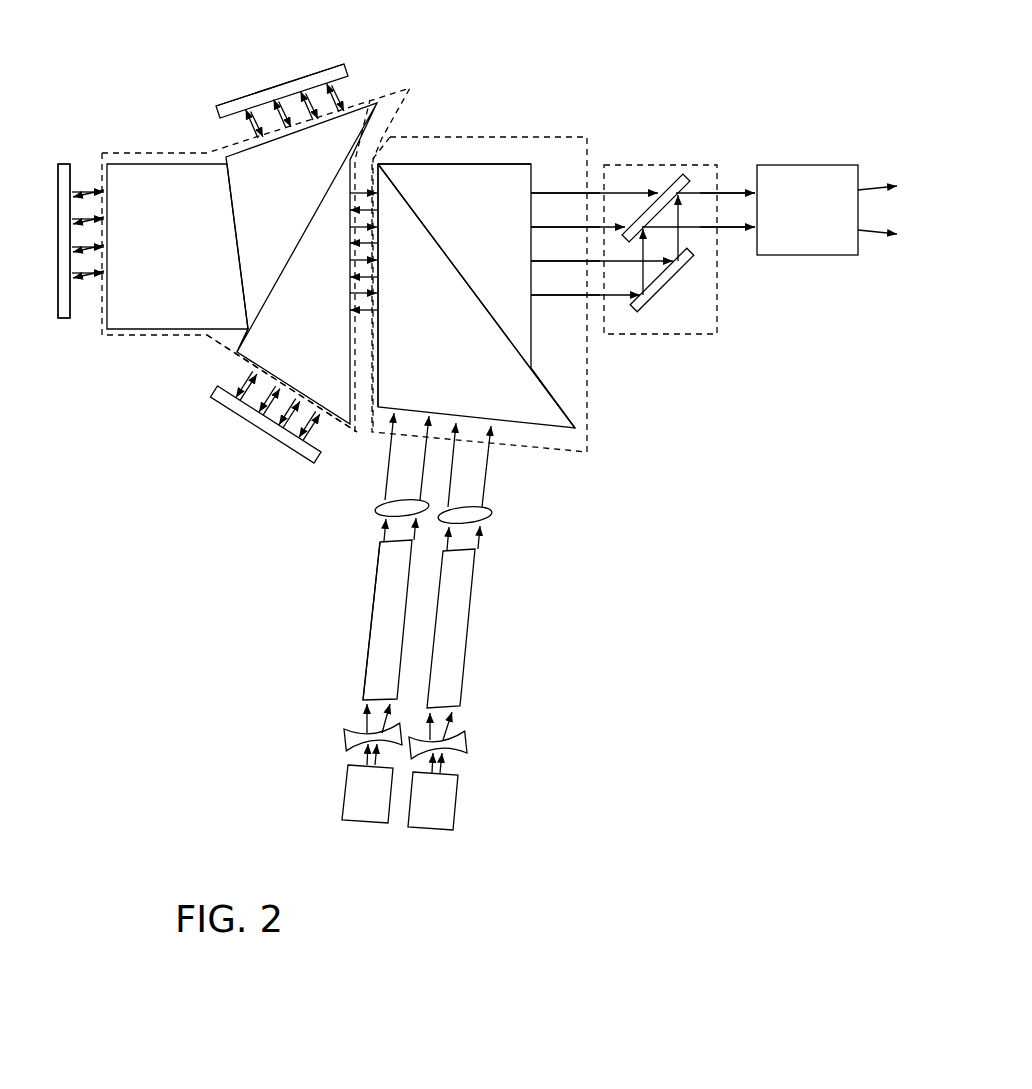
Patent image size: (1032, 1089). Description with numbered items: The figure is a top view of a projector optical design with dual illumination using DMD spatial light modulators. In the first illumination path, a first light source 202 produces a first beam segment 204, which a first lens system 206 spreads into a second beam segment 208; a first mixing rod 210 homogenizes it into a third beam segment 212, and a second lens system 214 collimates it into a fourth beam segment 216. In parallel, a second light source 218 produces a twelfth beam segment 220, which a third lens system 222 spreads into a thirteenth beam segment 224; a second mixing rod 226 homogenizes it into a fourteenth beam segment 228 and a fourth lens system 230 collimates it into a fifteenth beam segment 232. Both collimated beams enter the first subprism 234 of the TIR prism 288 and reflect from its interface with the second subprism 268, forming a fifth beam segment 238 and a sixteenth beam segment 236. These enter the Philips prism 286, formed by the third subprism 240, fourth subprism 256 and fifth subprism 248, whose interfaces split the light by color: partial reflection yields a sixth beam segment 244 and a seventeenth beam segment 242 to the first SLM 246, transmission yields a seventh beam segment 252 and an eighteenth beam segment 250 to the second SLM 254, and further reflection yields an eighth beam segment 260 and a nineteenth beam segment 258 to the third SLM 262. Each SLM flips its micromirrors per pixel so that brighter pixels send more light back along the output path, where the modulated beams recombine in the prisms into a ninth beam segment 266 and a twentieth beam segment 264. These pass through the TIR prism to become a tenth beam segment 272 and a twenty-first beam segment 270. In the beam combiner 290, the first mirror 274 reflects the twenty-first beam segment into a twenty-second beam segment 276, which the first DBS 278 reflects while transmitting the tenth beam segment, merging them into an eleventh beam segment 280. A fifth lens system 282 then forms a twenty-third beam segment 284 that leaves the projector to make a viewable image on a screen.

The first light source 202 is at (342, 800).
The first beam segment 204 is at (357, 758).
The first lens system 206 is at (345, 737).
The second beam segment 208 is at (357, 707).
The first mixing rod 210 is at (362, 655).
The third beam segment 212 is at (368, 600).
The second lens system 214 is at (378, 545).
The fourth beam segment 216 is at (382, 500).
The second light source 218 is at (460, 807).
The twelfth beam segment 220 is at (452, 766).
The third lens system 222 is at (464, 746).
The thirteenth beam segment 224 is at (458, 725).
The second mixing rod 226 is at (470, 640).
The fourteenth beam segment 228 is at (478, 553).
The fourth lens system 230 is at (492, 517).
The fifteenth beam segment 232 is at (492, 472).
The first subprism 234 is at (548, 393).
The sixteenth beam segment 236 is at (366, 300).
The fifth beam segment 238 is at (382, 184).
The third subprism 240 is at (228, 353).
The seventeenth beam segment 242 is at (327, 432).
The sixth beam segment 244 is at (247, 369).
The first SLM 246 is at (243, 418).
The fifth subprism 248 is at (142, 163).
The eighteenth beam segment 250 is at (73, 276).
The seventh beam segment 252 is at (97, 187).
The second SLM 254 is at (64, 320).
The fourth subprism 256 is at (398, 92).
The nineteenth beam segment 258 is at (247, 127).
The eighth beam segment 260 is at (333, 95).
The third SLM 262 is at (287, 82).
The twentieth beam segment 264 is at (353, 317).
The ninth beam segment 266 is at (363, 190).
The second subprism 268 is at (455, 163).
The twenty-first beam segment 270 is at (557, 298).
The tenth beam segment 272 is at (583, 160).
The first mirror 274 is at (665, 282).
The twenty-second beam segment 276 is at (682, 233).
The first DBS 278 is at (677, 175).
The eleventh beam segment 280 is at (723, 188).
The fifth lens system 282 is at (820, 165).
The twenty-third beam segment 284 is at (877, 230).
The Philips prism 286 is at (200, 152).
The TIR prism 288 is at (533, 135).
The beam combiner 290 is at (635, 163).